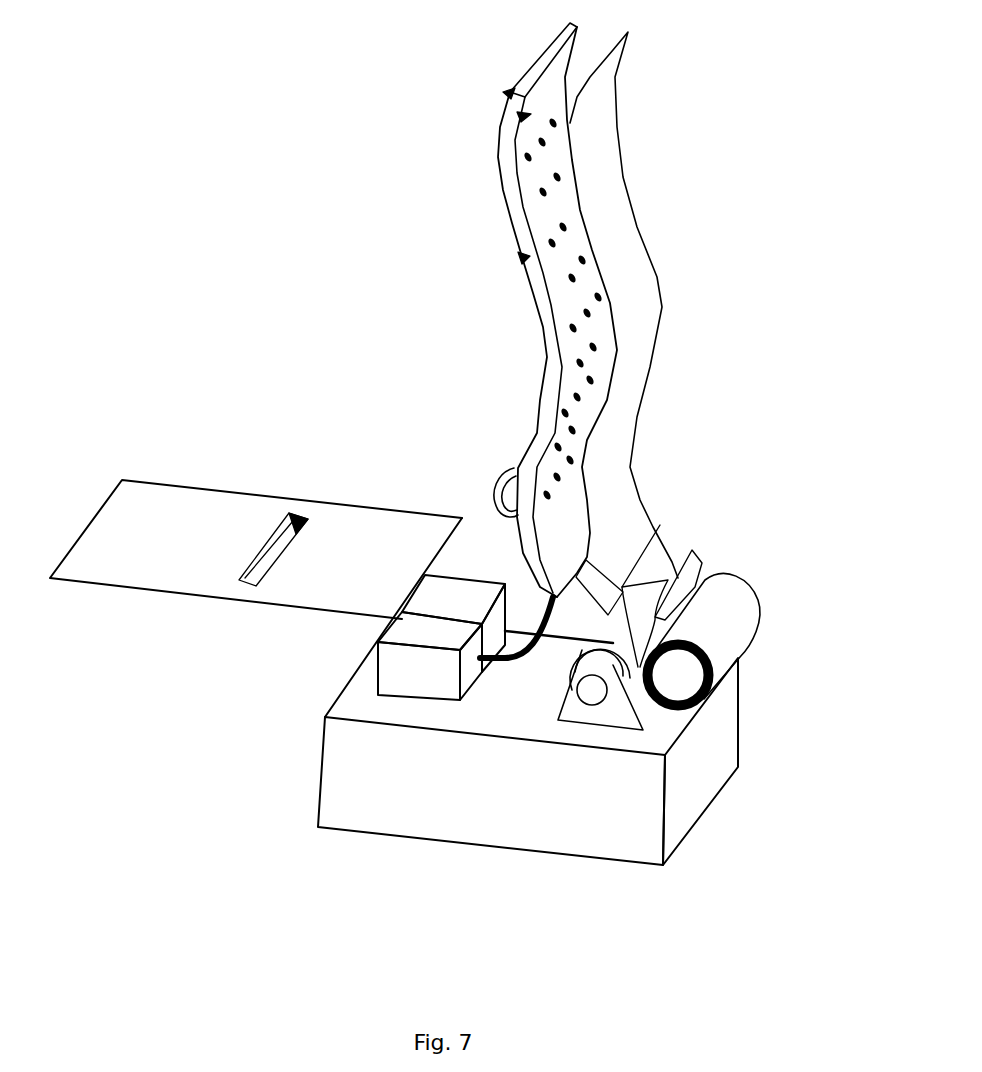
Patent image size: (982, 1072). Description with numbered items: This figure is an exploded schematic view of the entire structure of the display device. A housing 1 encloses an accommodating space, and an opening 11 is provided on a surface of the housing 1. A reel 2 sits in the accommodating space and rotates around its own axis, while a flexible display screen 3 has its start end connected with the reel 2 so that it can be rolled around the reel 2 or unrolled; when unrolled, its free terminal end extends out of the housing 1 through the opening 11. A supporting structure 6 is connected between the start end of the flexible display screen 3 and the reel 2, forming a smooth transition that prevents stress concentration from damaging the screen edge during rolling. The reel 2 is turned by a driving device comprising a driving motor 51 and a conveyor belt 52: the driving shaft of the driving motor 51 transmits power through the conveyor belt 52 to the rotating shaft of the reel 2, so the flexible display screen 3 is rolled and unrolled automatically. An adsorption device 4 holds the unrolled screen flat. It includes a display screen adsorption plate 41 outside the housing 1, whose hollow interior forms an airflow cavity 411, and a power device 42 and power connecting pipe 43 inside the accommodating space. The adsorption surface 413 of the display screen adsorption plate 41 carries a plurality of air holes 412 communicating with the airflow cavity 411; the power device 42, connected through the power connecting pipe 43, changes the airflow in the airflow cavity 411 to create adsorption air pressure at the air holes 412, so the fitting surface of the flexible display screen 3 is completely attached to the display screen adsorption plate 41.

The housing 1 is at (394, 622).
The opening 11 is at (280, 520).
The reel 2 is at (597, 683).
The flexible display screen 3 is at (637, 378).
The adsorption device 4 is at (479, 504).
The display screen adsorption plate 41 is at (479, 472).
The airflow cavity 411 is at (523, 258).
The air hole 412 is at (543, 323).
The adsorption surface 413 is at (507, 112).
The power device 42 is at (422, 680).
The power connecting pipe 43 is at (492, 682).
The driving motor 51 is at (473, 590).
The conveyor belt 52 is at (510, 470).
The supporting structure 6 is at (660, 560).